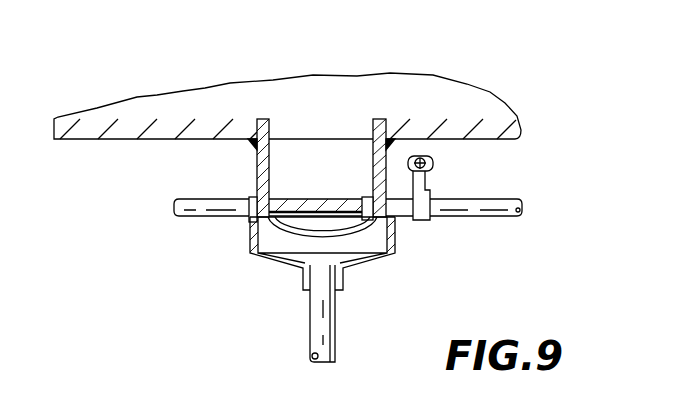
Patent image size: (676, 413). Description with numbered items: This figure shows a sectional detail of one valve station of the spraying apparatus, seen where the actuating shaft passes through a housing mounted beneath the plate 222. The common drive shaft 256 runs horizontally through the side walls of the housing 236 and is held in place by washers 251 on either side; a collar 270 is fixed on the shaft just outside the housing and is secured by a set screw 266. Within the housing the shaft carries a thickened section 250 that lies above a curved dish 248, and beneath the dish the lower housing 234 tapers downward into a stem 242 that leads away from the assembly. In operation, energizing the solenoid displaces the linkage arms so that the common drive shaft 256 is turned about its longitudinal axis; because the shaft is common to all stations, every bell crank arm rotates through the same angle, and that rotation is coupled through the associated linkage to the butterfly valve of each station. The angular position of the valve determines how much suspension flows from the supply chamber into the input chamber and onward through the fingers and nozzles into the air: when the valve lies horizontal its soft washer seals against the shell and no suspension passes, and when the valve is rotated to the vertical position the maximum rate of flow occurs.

The mounting plate 222 is at (203, 127).
The housing 236 is at (270, 137).
The washer 251 is at (247, 196).
The shaft 250 is at (286, 200).
The dish 248 is at (337, 218).
The butterfly valve 234 is at (318, 224).
The stem 242 is at (343, 280).
The common drive shaft 256 is at (478, 217).
The collar 270 is at (428, 222).
The chamber 266 is at (436, 170).